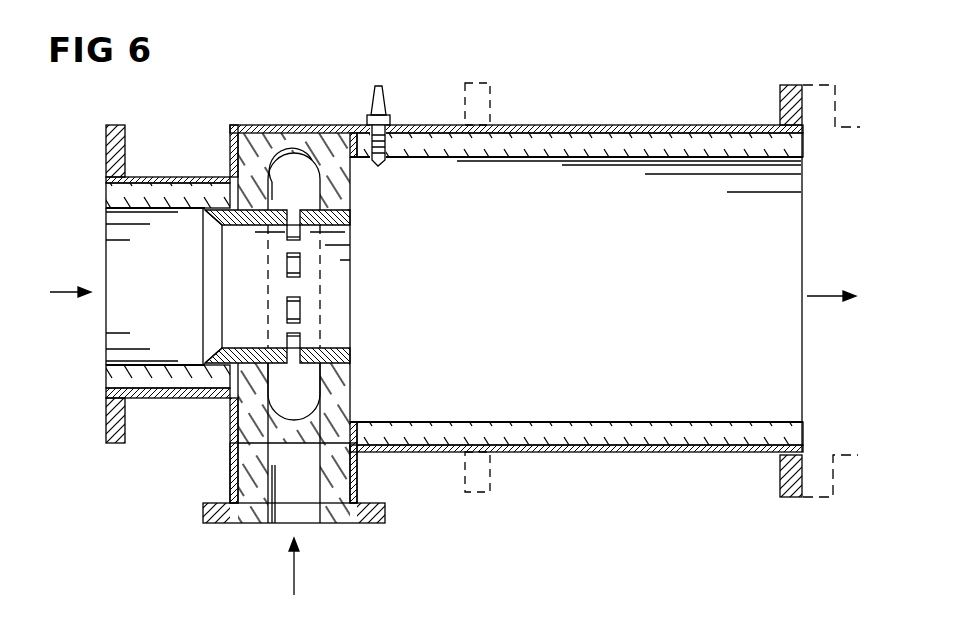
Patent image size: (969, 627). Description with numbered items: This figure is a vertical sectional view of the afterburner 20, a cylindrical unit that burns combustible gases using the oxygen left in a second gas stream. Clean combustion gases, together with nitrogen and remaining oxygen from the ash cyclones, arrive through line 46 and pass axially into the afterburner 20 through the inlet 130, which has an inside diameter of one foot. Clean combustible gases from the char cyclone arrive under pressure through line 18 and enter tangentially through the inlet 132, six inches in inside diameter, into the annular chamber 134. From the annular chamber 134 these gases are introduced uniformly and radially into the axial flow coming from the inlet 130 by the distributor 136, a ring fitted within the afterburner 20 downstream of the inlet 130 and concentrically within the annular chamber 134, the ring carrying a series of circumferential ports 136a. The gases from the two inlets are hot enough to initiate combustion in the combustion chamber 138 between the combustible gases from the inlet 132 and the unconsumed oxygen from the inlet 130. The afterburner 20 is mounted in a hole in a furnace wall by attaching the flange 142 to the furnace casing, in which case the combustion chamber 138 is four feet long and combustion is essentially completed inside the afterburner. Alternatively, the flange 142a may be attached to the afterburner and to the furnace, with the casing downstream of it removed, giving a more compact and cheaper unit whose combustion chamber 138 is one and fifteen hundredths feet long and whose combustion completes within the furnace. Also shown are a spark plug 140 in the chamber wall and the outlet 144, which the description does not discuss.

The afterburner 20 is at (574, 92).
The inlet 130 is at (125, 365).
The annular chamber 134 is at (302, 153).
The distributor 136 is at (240, 348).
The circumferential ports 136a is at (300, 308).
The combustion chamber 138 is at (600, 291).
The spark plug 140 is at (383, 92).
The flange 142 is at (780, 108).
The flange 142a is at (490, 84).
The outlet 144 is at (801, 252).
The line 46 is at (68, 294).
The inlet 132 is at (318, 522).
The line 18 is at (294, 578).